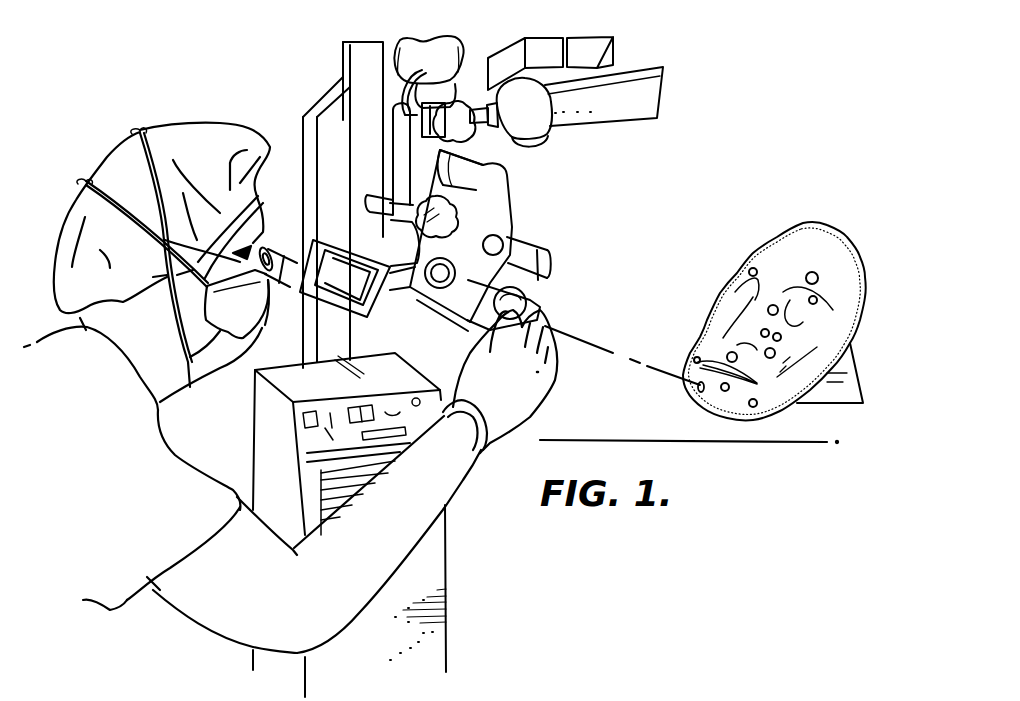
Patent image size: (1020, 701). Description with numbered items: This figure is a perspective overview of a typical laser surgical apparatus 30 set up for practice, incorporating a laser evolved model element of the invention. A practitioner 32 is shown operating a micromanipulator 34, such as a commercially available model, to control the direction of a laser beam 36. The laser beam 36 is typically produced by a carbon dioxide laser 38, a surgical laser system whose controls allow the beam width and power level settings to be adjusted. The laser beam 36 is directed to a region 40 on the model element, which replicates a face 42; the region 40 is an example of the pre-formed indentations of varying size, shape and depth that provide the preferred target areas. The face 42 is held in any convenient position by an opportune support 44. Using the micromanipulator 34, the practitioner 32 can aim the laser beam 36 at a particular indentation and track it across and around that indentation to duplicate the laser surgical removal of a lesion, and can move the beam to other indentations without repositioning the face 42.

The laser surgical apparatus 30 is at (700, 184).
The practitioner 32 is at (112, 498).
The micromanipulator 34 is at (550, 242).
The laser beam 36 is at (673, 320).
The carbon dioxide laser 38 is at (413, 370).
The region 40 is at (698, 389).
The face 42 is at (809, 212).
The support 44 is at (853, 384).